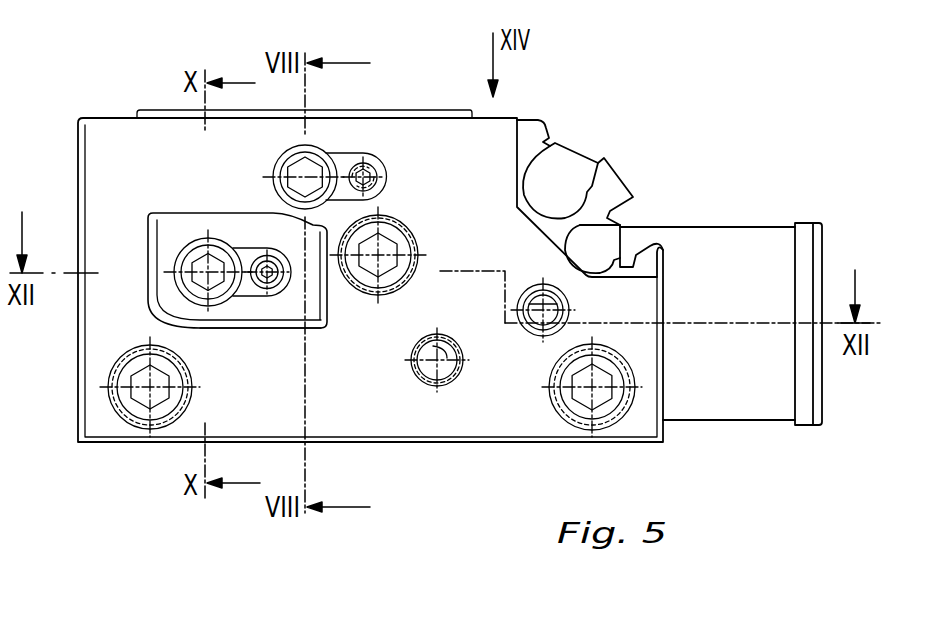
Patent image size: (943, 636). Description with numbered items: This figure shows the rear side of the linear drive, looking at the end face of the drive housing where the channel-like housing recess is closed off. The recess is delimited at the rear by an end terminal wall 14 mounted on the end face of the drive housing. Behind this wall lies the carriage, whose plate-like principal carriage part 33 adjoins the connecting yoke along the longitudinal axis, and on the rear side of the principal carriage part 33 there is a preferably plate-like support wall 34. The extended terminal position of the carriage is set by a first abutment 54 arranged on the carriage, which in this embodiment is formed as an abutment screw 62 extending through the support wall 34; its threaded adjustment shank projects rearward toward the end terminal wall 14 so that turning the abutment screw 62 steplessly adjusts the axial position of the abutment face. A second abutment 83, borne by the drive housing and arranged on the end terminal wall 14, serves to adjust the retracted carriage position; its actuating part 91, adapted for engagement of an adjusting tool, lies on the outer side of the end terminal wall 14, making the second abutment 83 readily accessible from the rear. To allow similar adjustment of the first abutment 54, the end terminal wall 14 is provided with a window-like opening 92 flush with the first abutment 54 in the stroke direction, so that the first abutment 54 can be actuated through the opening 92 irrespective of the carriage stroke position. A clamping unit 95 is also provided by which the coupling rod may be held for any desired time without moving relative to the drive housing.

The end terminal wall 14 is at (488, 437).
The plate-like principal carriage part 33 is at (150, 110).
The support wall 34 is at (180, 307).
The first abutment 54 is at (197, 241).
The abutment screw 62 is at (200, 262).
The second abutment 83 is at (328, 155).
The actuating part 91 is at (292, 176).
The window-like opening 92 is at (278, 318).
The clamping unit 95 is at (708, 218).